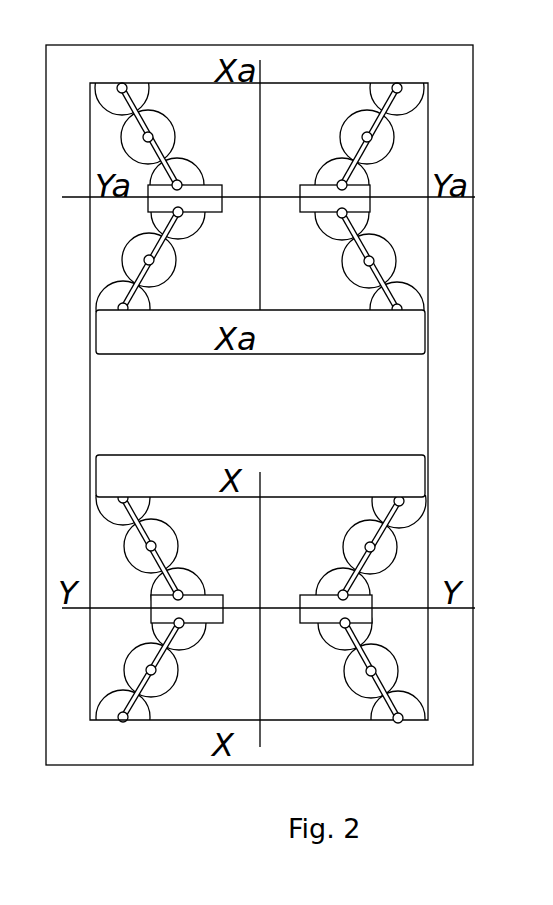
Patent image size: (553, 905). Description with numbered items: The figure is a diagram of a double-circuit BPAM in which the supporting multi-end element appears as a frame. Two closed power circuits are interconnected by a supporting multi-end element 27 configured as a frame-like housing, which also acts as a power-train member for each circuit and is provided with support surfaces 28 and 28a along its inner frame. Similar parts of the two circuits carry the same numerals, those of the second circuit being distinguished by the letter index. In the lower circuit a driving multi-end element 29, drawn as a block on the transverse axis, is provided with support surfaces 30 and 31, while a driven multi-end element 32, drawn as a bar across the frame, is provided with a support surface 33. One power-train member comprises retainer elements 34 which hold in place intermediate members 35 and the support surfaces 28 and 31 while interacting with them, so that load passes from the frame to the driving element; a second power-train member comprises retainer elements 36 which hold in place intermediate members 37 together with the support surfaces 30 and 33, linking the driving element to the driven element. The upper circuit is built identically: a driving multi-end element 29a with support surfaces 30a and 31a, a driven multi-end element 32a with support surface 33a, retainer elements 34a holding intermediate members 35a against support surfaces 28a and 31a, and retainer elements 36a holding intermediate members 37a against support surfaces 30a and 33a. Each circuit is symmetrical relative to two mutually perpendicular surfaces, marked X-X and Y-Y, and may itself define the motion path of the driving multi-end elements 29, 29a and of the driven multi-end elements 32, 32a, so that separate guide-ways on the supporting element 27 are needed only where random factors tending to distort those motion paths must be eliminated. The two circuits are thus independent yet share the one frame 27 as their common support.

The supporting multi-end element 27 is at (358, 67).
The support surface 28 is at (417, 713).
The support surface 28a is at (415, 93).
The driving multi-end element 29 is at (358, 615).
The driving multi-end element 29a is at (358, 208).
The support surface 30 is at (362, 583).
The support surface 30a is at (358, 222).
The support surface 31 is at (358, 630).
The support surface 31a is at (357, 186).
The driven multi-end element 32 is at (368, 473).
The driven multi-end element 32a is at (377, 337).
The support surface 33 is at (413, 505).
The support surface 33a is at (413, 305).
The retainer element 34 is at (360, 632).
The retainer element 34a is at (380, 153).
The intermediate member 35 is at (390, 677).
The intermediate member 35a is at (358, 182).
The retainer element 36 is at (400, 522).
The retainer element 36a is at (372, 253).
The intermediate member 37 is at (390, 554).
The intermediate member 37a is at (387, 268).